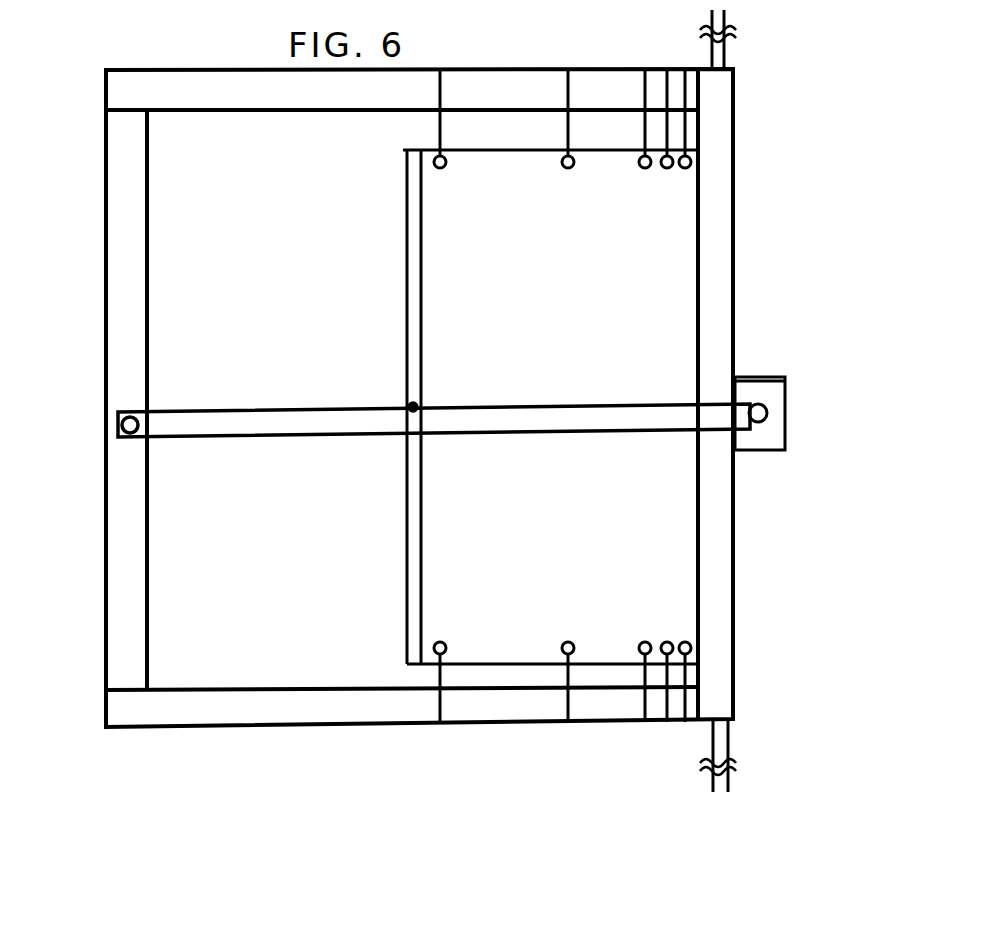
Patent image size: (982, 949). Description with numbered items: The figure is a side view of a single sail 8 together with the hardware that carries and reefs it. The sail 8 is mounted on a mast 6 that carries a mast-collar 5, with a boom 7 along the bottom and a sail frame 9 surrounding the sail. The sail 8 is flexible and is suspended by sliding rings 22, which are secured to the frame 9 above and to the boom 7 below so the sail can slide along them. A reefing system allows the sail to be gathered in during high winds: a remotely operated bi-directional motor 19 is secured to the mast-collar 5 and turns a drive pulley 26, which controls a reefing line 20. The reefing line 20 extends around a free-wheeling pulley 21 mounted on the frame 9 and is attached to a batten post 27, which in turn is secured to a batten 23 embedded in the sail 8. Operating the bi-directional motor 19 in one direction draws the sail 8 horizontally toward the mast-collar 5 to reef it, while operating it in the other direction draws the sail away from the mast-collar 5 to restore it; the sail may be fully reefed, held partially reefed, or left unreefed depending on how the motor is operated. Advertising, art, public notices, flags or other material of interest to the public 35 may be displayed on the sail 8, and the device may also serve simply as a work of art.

The mast-collar 5 is at (725, 522).
The mast 6 is at (728, 735).
The boom 7 is at (365, 703).
The sail 8 is at (598, 318).
The sail frame 9 is at (207, 102).
The bi-directional motor 19 is at (760, 377).
The reefing line 20 is at (310, 437).
The free-wheeling pulley 21 is at (120, 428).
The sliding rings 22 is at (440, 125).
The batten 23 is at (415, 265).
The drive pulley 26 is at (765, 410).
The batten post 27 is at (410, 403).
The material of interest to the public 35 is at (420, 510).